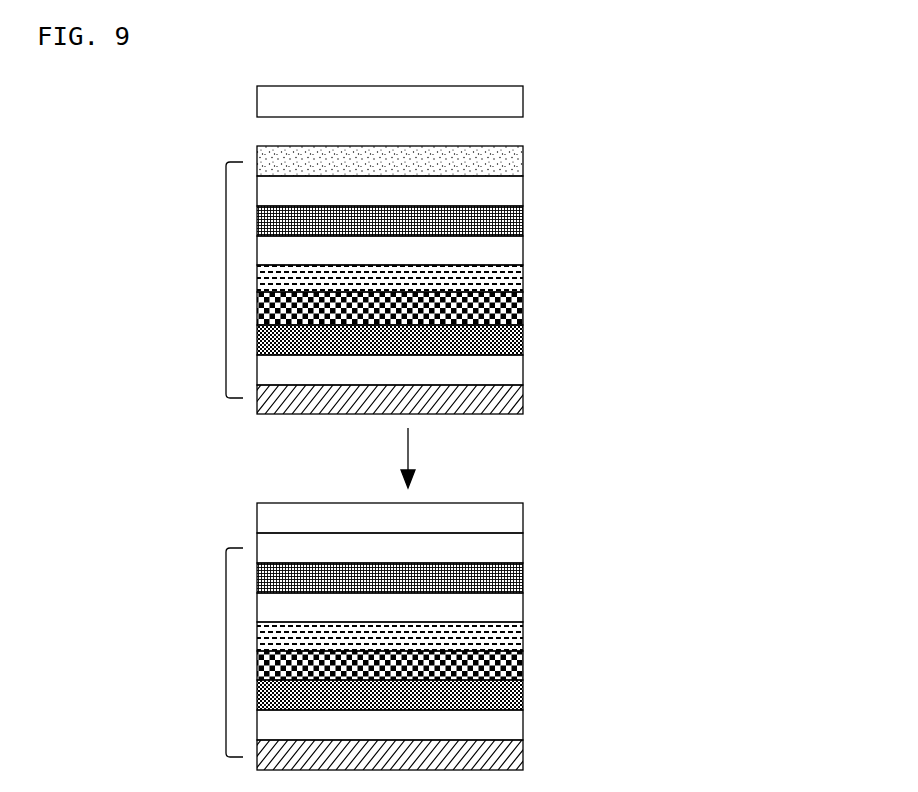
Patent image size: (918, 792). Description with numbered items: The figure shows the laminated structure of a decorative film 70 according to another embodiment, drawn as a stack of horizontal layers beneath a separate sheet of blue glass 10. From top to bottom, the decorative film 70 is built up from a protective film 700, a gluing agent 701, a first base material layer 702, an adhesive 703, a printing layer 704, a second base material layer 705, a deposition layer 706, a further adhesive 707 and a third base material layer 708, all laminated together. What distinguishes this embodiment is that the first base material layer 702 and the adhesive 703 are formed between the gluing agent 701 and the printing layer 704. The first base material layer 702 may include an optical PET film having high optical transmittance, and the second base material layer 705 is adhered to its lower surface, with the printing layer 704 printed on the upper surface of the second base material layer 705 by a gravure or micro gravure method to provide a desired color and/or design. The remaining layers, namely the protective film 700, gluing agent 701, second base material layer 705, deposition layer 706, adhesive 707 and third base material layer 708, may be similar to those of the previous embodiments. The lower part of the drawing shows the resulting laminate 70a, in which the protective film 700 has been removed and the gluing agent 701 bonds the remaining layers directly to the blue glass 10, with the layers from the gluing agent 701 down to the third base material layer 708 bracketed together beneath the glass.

The blue glass 10 is at (526, 101).
The decorative film 70 is at (226, 262).
The decorative film laminated on the blue glass 70a is at (226, 657).
The protective film 700 is at (526, 160).
The gluing agent 701 is at (526, 190).
The first base material layer 702 is at (526, 220).
The adhesive 703 is at (526, 249).
The printing layer 704 is at (526, 280).
The second base material layer 705 is at (526, 310).
The deposition layer 706 is at (526, 340).
The adhesive 707 is at (526, 369).
The third base material layer 708 is at (526, 398).